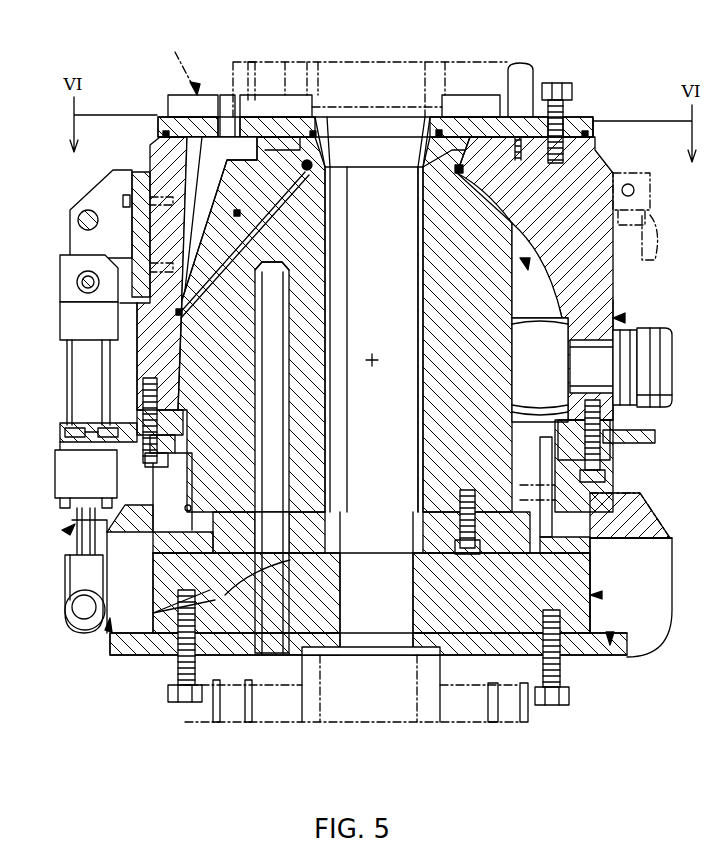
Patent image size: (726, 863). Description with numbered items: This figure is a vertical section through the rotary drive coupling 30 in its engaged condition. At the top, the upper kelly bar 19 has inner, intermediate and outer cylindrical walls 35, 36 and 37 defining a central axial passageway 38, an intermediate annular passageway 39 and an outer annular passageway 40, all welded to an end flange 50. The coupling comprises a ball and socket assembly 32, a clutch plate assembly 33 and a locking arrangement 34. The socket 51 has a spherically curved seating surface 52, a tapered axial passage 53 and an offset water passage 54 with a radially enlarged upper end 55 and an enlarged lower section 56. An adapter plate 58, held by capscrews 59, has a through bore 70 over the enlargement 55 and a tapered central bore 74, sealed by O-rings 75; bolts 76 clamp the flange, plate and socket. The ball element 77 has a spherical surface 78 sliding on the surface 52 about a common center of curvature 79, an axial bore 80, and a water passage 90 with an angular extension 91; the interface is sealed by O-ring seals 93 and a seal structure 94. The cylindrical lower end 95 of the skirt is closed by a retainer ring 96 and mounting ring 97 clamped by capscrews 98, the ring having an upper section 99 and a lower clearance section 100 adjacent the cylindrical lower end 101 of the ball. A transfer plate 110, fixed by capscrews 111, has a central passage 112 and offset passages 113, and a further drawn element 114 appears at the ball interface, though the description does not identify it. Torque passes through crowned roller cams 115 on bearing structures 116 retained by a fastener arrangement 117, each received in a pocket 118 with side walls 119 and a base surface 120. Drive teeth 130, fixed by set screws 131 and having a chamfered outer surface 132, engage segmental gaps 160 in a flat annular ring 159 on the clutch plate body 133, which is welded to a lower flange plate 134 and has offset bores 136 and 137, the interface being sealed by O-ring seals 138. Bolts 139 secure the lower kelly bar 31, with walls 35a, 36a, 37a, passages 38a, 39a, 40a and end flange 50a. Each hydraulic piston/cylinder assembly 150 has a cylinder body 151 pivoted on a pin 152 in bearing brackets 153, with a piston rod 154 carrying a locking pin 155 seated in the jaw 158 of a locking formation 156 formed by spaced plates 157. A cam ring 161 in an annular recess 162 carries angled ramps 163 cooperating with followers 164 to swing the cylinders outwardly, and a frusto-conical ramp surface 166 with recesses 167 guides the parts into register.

The upper kelly bar 19 is at (174, 65).
The rotary drive coupling 30 is at (610, 645).
The lower kelly bar 31 is at (205, 722).
The ball and socket assembly 32 is at (625, 318).
The clutch plate assembly 33 is at (602, 595).
The locking arrangement 34 is at (62, 530).
The inner cylindrical wall 35 is at (320, 60).
The intermediate cylindrical wall 36 is at (285, 62).
The outer cylindrical wall 37 is at (247, 70).
The central axial passageway 38 is at (375, 60).
The intermediate annular passageway 39 is at (307, 60).
The outer annular passageway 40 is at (250, 60).
The end flange 50 is at (168, 100).
The socket 51 is at (595, 285).
The spherically curved internal seating surface 52 is at (542, 268).
The tapered axial passage 53 is at (432, 165).
The water passage 54 is at (224, 184).
The radially enlarged upper end 55 is at (242, 143).
The enlarged section 56 is at (240, 268).
The adapter plate 58 is at (592, 120).
The capscrews 59 is at (512, 63).
The through bore 70 is at (200, 115).
The tapered central bore 74 is at (392, 130).
The O-rings 75 is at (163, 134).
The bolts 76 is at (556, 83).
The ball element 77 is at (425, 438).
The spherically curved surface 78 is at (530, 175).
The common center of curvature 79 is at (372, 366).
The axial bore 80 is at (382, 334).
The water passage 90 is at (278, 438).
The angular extension 91 is at (245, 312).
The O-ring seals 93 is at (240, 213).
The seal structure 94 is at (312, 168).
The lower end of socket skirt 95 is at (150, 355).
The retainer ring 96 is at (137, 420).
The mounting ring 97 is at (135, 455).
The capscrews 98 is at (62, 485).
The upper section 99 is at (200, 488).
The lower section 100 is at (190, 470).
The lower end of ball 101 is at (185, 510).
The transfer plate 110 is at (280, 522).
The capscrews 111 is at (432, 540).
The central axial passage 112 is at (270, 548).
The offset axially directed passages 113 is at (290, 568).
The sleeve 114 is at (285, 482).
The crowned roller cams 115 is at (543, 372).
The bearing structure 116 is at (578, 372).
The fastener arrangement 117 is at (655, 340).
The pocket 118 is at (618, 250).
The side walls 119 is at (505, 252).
The base surface 120 is at (480, 276).
The drive teeth 130 is at (610, 535).
The set screws 131 is at (590, 480).
The chamfered outer surface 132 is at (600, 538).
The clutch plate body 133 is at (460, 657).
The lower flange plate 134 is at (600, 650).
The radially offset bore 136 is at (300, 585).
The radially offset bore 137 is at (395, 612).
The O-ring seals 138 is at (153, 613).
The bolts 139 is at (190, 702).
The hydraulic piston/cylinder assemblies 150 is at (60, 345).
The cylinder body 151 is at (62, 325).
The pin 152 is at (80, 275).
The bearing brackets 153 is at (62, 298).
The piston rod 154 is at (75, 515).
The locking pin 155 is at (68, 628).
The locking formations 156 is at (105, 630).
The spaced plates 157 is at (140, 599).
The jaw 158 is at (78, 625).
The flat annular ring 159 is at (200, 580).
The segmental gaps 160 is at (585, 565).
The cam ring 161 is at (655, 440).
The annular recess 162 is at (608, 440).
The angled ramps 163 is at (135, 428).
The followers 164 is at (130, 445).
The frusto-conical peripheral ramp surface 166 is at (155, 545).
The recesses 167 is at (120, 548).
The inner cylindrical wall 35a is at (305, 725).
The intermediate cylindrical wall 36a is at (250, 722).
The outer cylindrical wall 37a is at (217, 722).
The central axial passage 38a is at (390, 722).
The annular passage 39a is at (290, 725).
The annular passage 40a is at (240, 725).
The end flange 50a is at (165, 665).